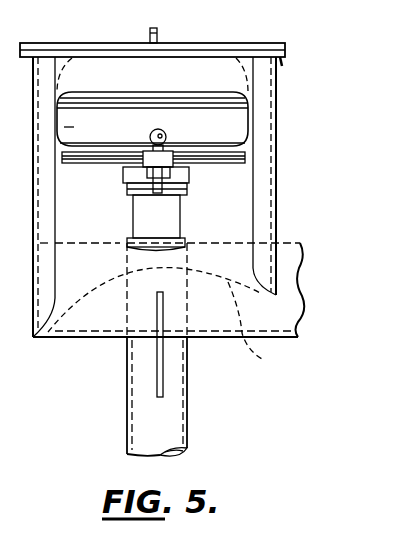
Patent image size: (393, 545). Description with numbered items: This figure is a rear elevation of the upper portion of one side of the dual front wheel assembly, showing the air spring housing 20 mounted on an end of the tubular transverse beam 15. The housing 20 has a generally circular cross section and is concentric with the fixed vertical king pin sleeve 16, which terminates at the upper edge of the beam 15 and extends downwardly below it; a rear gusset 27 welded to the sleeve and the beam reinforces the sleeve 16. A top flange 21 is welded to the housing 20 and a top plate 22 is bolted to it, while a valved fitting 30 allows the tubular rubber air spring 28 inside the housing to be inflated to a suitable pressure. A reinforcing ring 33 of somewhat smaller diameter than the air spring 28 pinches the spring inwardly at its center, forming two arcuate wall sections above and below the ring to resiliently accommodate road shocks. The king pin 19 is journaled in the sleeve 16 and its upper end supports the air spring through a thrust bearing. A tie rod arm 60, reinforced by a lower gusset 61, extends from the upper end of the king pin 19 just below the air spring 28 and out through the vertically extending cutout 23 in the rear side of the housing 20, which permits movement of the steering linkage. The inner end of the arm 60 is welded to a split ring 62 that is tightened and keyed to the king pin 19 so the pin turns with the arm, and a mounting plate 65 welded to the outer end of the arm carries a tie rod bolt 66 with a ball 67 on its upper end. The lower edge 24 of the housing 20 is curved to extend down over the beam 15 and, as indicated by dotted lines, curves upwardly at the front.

The transverse beam 15 is at (230, 250).
The king pin sleeve 16 is at (138, 398).
The king pin 19 is at (145, 218).
The air spring housing 20 is at (47, 141).
The top flange 21 is at (279, 60).
The top plate 22 is at (223, 43).
The cutout 23 is at (58, 240).
The lower edge 24 is at (48, 330).
The rear gusset 27 is at (163, 383).
The air spring 28 is at (249, 120).
The valved fitting 30 is at (158, 35).
The reinforcing ring 33 is at (137, 100).
The tie rod arm 60 is at (133, 177).
The lower gusset 61 is at (127, 186).
The split ring 62 is at (186, 187).
The mounting plate 65 is at (148, 151).
The tie rod bolt 66 is at (186, 171).
The ball 67 is at (167, 131).